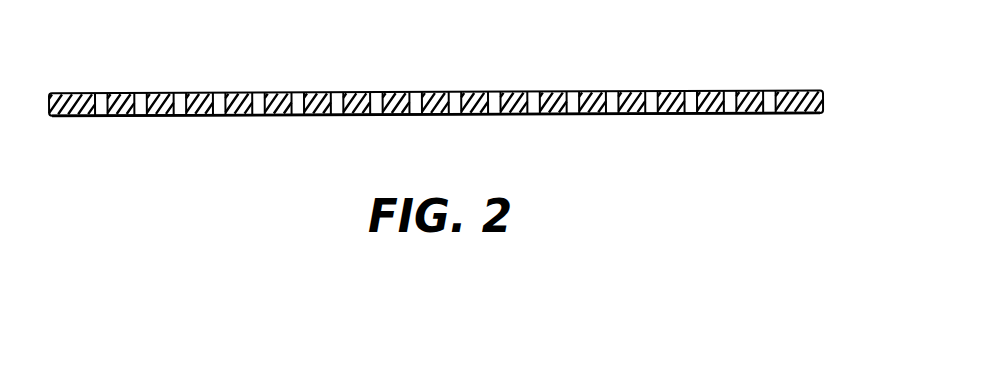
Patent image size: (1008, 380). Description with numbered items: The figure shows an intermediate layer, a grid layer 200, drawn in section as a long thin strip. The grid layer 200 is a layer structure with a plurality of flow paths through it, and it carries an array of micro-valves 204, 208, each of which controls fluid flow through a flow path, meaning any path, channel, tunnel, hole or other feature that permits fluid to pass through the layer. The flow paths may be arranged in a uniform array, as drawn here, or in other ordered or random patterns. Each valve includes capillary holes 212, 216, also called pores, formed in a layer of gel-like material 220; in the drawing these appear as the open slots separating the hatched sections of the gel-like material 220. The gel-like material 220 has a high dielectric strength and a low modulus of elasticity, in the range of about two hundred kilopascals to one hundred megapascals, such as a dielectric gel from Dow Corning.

The grid layer 200 is at (259, 68).
The micro-valve 204 is at (741, 73).
The micro-valve 208 is at (735, 78).
The capillary hole 212 is at (690, 116).
The capillary hole 216 is at (730, 116).
The gel-like material 220 is at (825, 101).